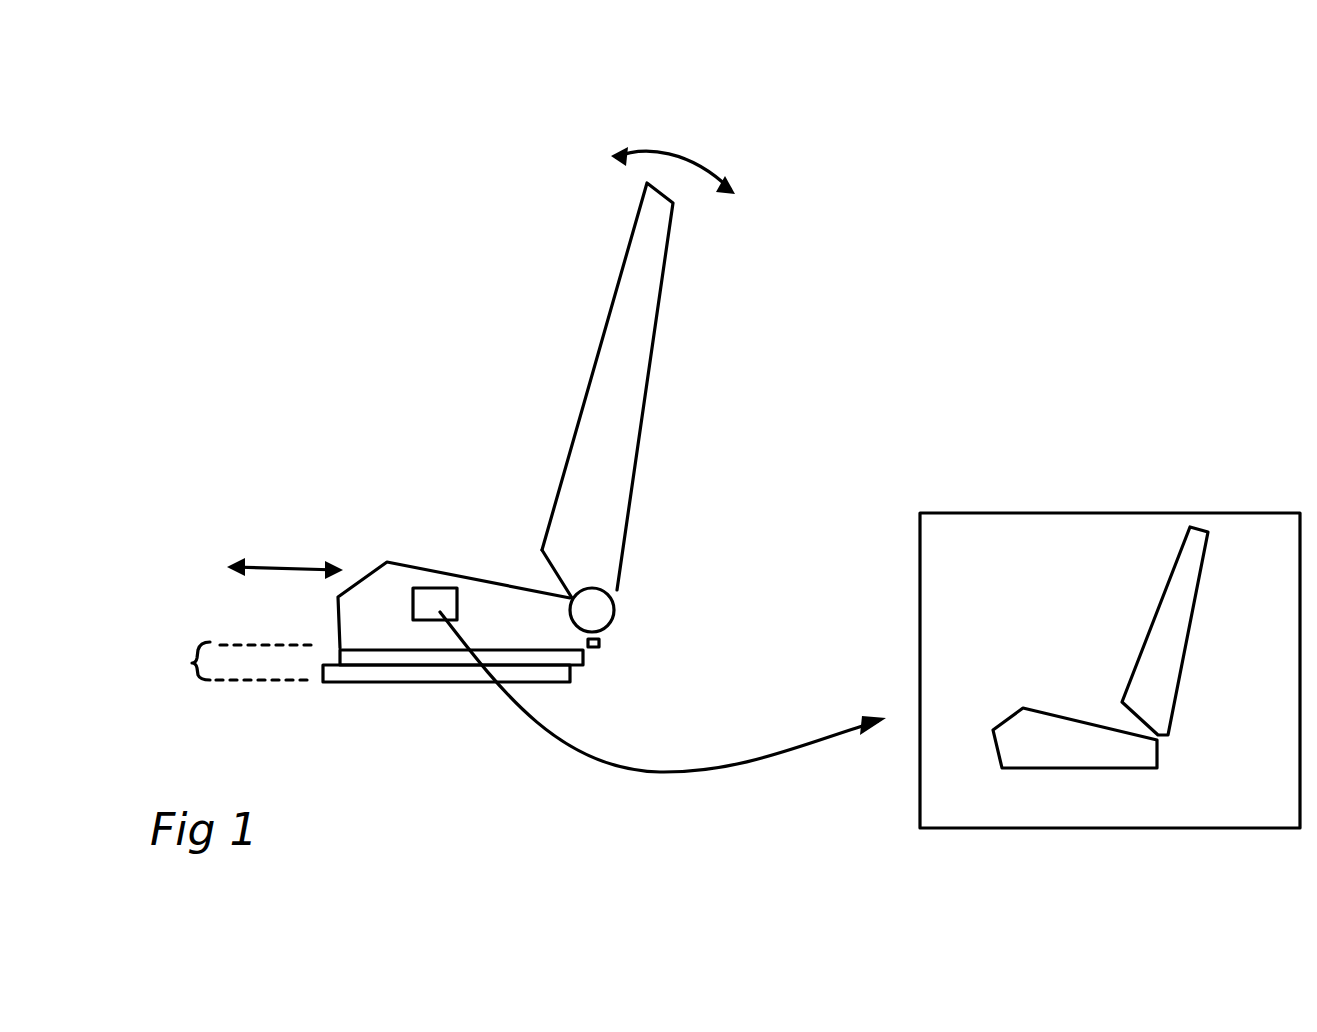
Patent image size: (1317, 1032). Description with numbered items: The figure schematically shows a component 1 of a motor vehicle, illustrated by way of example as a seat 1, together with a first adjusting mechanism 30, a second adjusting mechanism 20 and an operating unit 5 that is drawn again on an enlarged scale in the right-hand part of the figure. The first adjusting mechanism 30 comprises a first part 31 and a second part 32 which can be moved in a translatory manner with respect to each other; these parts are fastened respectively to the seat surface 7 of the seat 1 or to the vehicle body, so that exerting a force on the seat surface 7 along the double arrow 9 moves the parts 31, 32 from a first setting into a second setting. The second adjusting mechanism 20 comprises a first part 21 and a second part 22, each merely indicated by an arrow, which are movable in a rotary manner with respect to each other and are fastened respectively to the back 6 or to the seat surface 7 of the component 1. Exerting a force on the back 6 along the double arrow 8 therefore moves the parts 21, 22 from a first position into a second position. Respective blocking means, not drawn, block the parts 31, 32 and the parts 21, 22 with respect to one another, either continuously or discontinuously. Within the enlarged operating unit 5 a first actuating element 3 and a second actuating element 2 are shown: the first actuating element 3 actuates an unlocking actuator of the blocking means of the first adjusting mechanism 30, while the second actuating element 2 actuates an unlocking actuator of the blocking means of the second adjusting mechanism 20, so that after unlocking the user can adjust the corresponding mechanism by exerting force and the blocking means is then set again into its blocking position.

The component 1 is at (490, 446).
The second actuating element 2 is at (1170, 588).
The first actuating element 3 is at (1038, 757).
The operating unit 5 is at (440, 600).
The back 6 is at (627, 303).
The seat surface 7 is at (500, 583).
The direction of force on the back 8 is at (678, 155).
The direction of force on the seat surface 9 is at (257, 563).
The second adjusting mechanism 20 is at (597, 607).
The first part of the second adjusting mechanism 21 is at (596, 572).
The second part of the second adjusting mechanism 22 is at (599, 647).
The first adjusting mechanism 30 is at (224, 661).
The first part of the first adjusting mechanism 31 is at (340, 648).
The second part of the first adjusting mechanism 32 is at (353, 672).